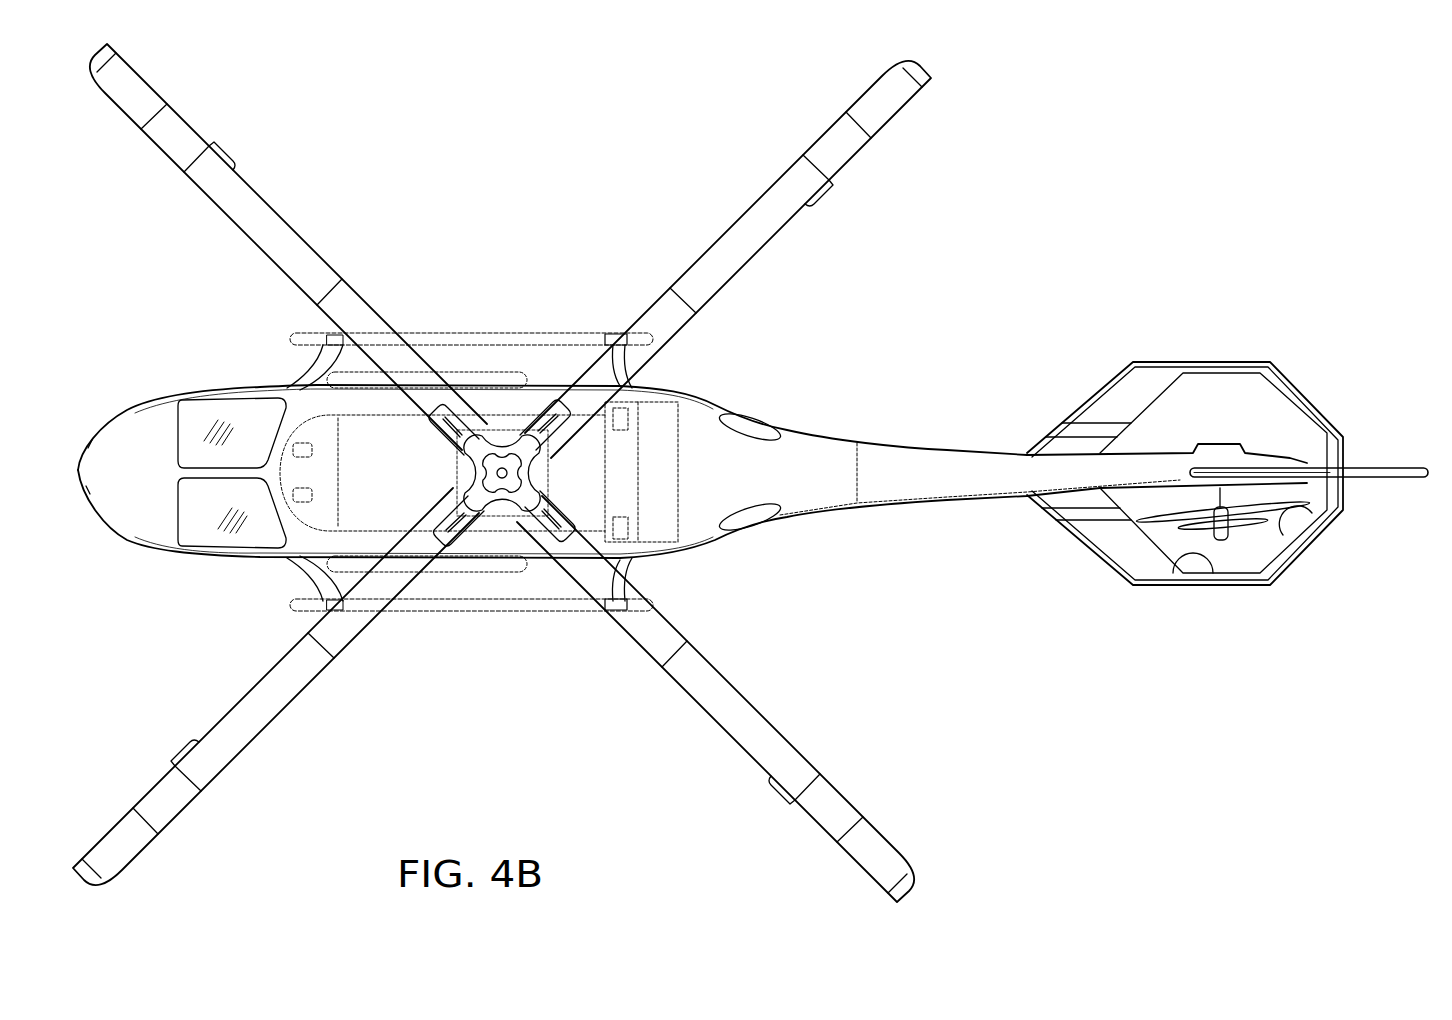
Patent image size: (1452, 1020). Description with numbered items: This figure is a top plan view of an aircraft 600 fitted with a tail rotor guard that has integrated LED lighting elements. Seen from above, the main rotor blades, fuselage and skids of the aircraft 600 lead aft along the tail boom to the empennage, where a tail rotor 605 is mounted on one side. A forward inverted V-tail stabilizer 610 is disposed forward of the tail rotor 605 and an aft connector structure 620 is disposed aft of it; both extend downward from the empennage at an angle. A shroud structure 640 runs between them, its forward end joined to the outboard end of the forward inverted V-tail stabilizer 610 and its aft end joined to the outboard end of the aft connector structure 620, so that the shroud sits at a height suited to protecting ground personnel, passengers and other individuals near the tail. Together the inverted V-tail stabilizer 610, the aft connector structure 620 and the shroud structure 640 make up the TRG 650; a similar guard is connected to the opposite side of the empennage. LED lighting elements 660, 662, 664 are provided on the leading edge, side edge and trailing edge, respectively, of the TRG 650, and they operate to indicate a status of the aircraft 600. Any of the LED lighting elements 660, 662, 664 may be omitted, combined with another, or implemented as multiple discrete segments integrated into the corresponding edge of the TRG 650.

The aircraft 600 is at (1043, 200).
The tail rotor 605 is at (1283, 575).
The forward inverted V-tail stabilizer 610 is at (1113, 541).
The aft connector structure 620 is at (1325, 531).
The shroud structure 640 is at (1185, 574).
The TRG 650 is at (1125, 601).
The LED lighting element 660 is at (1050, 517).
The LED lighting element 662 is at (1228, 585).
The LED lighting element 664 is at (1298, 561).